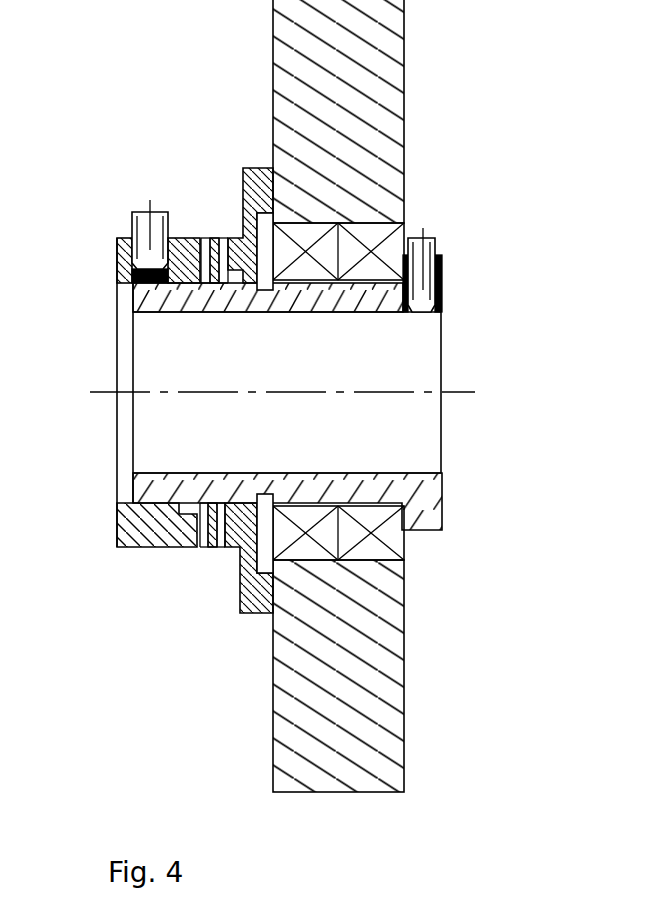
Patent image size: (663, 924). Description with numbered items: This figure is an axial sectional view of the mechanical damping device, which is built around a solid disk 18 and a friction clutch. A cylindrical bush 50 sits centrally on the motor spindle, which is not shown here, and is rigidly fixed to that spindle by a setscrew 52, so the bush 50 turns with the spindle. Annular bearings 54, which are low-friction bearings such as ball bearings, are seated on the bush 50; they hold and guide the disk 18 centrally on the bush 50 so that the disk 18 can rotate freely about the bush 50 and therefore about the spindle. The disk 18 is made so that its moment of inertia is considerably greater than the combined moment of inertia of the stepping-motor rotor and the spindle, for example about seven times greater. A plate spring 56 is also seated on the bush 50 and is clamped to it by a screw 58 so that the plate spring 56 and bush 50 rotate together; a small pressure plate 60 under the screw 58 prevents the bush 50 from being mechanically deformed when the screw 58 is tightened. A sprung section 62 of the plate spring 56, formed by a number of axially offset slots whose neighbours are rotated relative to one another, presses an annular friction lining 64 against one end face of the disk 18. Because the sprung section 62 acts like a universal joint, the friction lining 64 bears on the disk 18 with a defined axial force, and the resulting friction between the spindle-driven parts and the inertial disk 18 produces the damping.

The disk 18 is at (350, 740).
The cylindrical bush 50 is at (440, 527).
The setscrew 52 is at (423, 273).
The annular bearings 54 is at (373, 237).
The plate spring 56 is at (117, 543).
The screw 58 is at (133, 230).
The pressure plate 60 is at (117, 257).
The sprung section 62 is at (207, 247).
The annular friction lining 64 is at (250, 613).